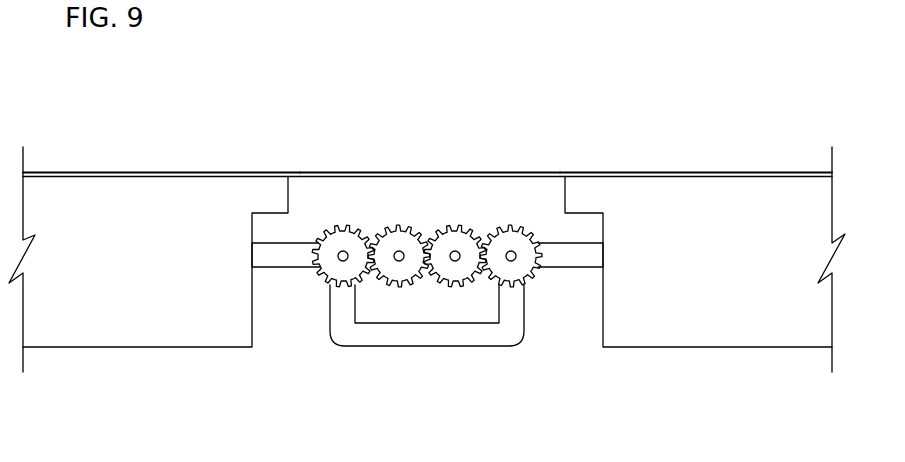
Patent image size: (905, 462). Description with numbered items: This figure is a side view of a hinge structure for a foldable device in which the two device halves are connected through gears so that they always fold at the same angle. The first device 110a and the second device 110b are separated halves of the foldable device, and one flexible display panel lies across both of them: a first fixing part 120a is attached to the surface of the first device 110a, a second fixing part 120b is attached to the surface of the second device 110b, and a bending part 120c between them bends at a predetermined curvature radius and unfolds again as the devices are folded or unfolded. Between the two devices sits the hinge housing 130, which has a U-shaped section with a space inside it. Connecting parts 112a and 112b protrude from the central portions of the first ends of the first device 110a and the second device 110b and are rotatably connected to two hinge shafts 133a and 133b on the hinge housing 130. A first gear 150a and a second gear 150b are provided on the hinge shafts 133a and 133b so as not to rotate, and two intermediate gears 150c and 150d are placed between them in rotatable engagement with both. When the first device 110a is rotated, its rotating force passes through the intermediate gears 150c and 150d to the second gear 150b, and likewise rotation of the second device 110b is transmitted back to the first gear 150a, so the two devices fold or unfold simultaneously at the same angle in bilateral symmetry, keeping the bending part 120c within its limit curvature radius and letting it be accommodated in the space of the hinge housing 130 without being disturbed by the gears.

The first device 110a is at (171, 305).
The second device 110b is at (685, 305).
The connecting part 112a is at (282, 262).
The connecting part 112b is at (572, 263).
The first fixing part 120a is at (140, 172).
The second fixing part 120b is at (745, 172).
The bending part 120c is at (426, 172).
The hinge housing 130 is at (424, 345).
The hinge shaft 133a is at (343, 257).
The hinge shaft 133b is at (511, 257).
The first gear 150a is at (343, 225).
The second gear 150b is at (511, 225).
The intermediate gear 150c is at (399, 225).
The intermediate gear 150d is at (455, 225).